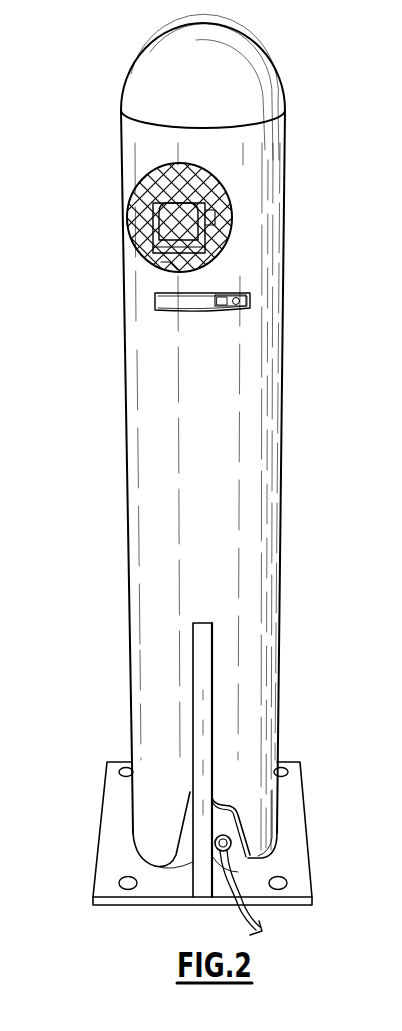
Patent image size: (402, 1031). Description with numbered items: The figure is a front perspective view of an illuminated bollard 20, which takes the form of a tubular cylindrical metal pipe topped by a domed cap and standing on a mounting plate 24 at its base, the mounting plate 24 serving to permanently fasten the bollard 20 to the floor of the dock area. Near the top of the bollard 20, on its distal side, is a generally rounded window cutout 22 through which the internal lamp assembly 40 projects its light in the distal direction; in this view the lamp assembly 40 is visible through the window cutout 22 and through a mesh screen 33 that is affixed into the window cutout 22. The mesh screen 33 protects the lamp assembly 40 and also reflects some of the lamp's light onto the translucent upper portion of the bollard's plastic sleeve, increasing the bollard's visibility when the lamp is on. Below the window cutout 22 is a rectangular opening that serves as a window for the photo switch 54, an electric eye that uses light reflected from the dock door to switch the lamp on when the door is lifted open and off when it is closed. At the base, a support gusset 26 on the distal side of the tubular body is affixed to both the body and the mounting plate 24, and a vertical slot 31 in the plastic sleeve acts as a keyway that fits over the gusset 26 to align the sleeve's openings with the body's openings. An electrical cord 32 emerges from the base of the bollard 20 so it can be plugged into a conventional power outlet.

The bollard 20 is at (108, 524).
The window cutout 22 is at (130, 208).
The mounting plate 24 is at (290, 848).
The support gusset 26 is at (203, 756).
The vertical slot 31 is at (234, 824).
The electrical cord 32 is at (236, 873).
The mesh screen 33 is at (222, 217).
The lamp assembly 40 is at (153, 228).
The photo switch 54 is at (232, 310).